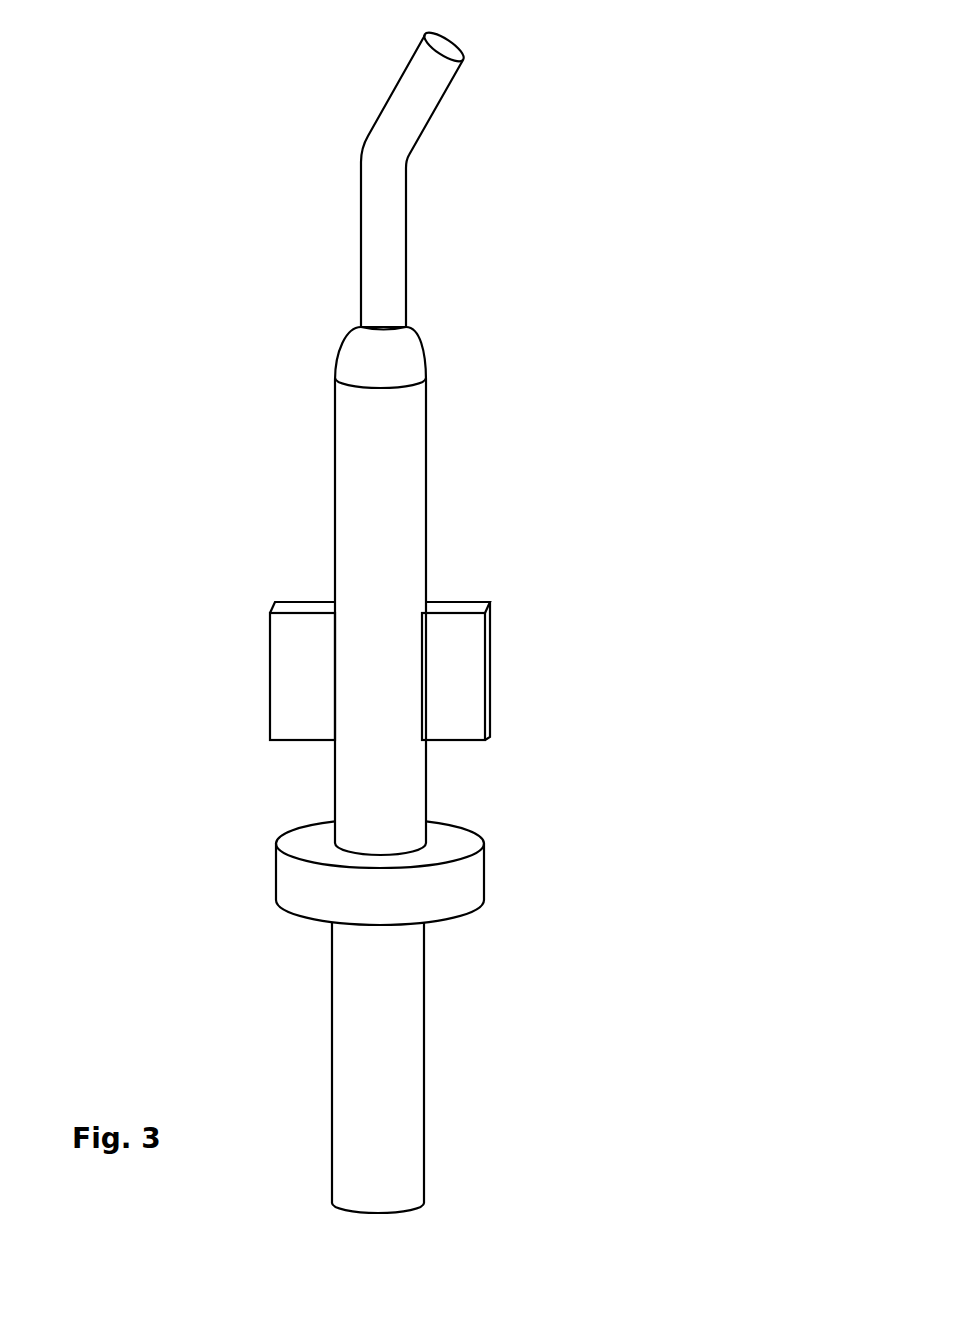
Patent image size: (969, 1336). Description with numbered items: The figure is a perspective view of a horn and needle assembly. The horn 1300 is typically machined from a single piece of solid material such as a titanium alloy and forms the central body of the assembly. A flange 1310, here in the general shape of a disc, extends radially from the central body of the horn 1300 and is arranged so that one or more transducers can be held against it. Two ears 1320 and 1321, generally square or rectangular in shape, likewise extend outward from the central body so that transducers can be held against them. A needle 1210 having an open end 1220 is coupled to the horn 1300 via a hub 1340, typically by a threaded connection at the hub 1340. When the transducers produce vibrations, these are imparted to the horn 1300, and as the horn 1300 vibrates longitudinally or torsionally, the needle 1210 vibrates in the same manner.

The open end 1220 is at (474, 45).
The needle 1210 is at (420, 218).
The hub 1340 is at (439, 365).
The ear 1321 is at (257, 685).
The ear 1320 is at (511, 670).
The flange 1310 is at (501, 877).
The horn 1300 is at (442, 1119).